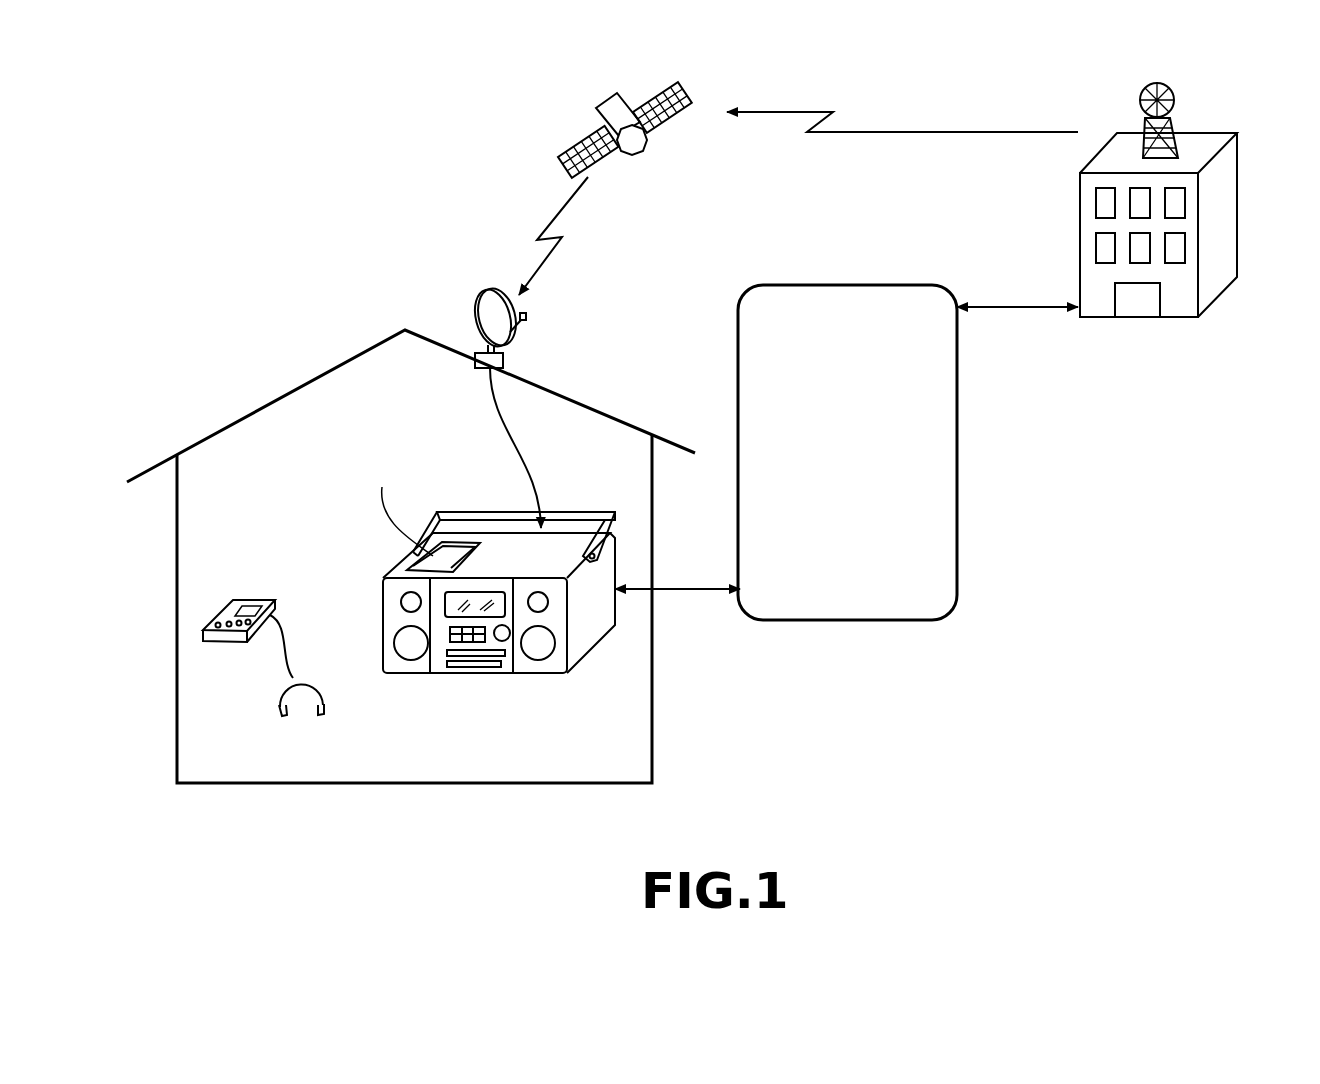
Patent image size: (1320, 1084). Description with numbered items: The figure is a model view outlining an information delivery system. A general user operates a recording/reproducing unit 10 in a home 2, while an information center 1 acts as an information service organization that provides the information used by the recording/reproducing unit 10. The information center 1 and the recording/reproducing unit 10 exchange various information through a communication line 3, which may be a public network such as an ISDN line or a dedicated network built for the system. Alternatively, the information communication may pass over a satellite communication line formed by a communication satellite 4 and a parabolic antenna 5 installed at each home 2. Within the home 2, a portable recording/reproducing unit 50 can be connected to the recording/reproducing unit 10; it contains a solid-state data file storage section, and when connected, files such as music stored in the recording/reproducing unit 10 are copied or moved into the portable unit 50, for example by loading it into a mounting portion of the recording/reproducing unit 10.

The information center 1 is at (1080, 310).
The home 2 is at (392, 783).
The communication line 3 is at (957, 505).
The communication satellite 4 is at (655, 142).
The parabolic antenna 5 is at (476, 302).
The recording/reproducing unit 10 is at (408, 673).
The portable recording/reproducing unit 50 is at (232, 598).